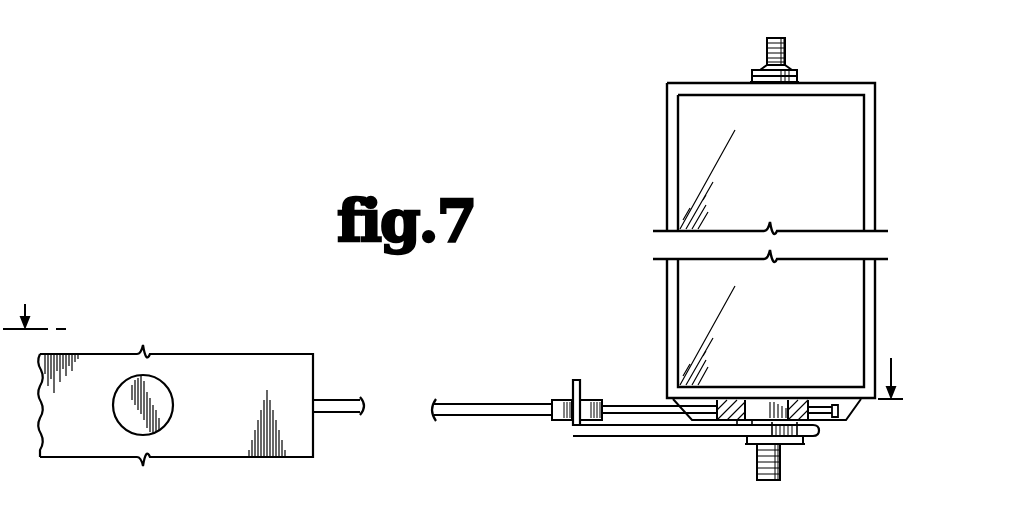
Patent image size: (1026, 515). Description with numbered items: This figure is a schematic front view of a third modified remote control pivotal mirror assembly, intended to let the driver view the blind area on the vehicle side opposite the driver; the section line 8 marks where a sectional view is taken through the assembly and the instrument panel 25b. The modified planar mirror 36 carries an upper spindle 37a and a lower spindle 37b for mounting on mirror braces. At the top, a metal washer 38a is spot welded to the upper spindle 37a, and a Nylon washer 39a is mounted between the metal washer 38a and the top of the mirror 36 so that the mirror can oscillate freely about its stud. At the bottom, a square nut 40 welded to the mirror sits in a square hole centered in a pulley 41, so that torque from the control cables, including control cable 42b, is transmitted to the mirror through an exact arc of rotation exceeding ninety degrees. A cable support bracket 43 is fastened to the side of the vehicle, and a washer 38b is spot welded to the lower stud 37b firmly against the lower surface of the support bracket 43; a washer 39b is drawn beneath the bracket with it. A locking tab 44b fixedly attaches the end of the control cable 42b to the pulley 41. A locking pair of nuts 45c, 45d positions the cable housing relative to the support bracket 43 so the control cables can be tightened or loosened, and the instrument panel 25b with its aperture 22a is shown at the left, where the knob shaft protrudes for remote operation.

The section line 8— 8 is at (453, 342).
The aperture 22a is at (113, 410).
The instrument panel 25b is at (240, 398).
The planar mirror 36 is at (780, 177).
The upper spindle 37a is at (767, 44).
The metal washer 38a is at (754, 73).
The Nylon washer 39a is at (797, 79).
The square nut 40 is at (736, 408).
The pulley 41 is at (684, 419).
The control cable 42b is at (622, 410).
The cable support bracket 43 is at (612, 437).
The locking tab 44b is at (843, 415).
The locking nut 45c is at (586, 400).
The locking nut 45d is at (566, 421).
The lower spindle 37b is at (757, 471).
The washer 38b is at (751, 441).
The lower washer 39b is at (800, 446).